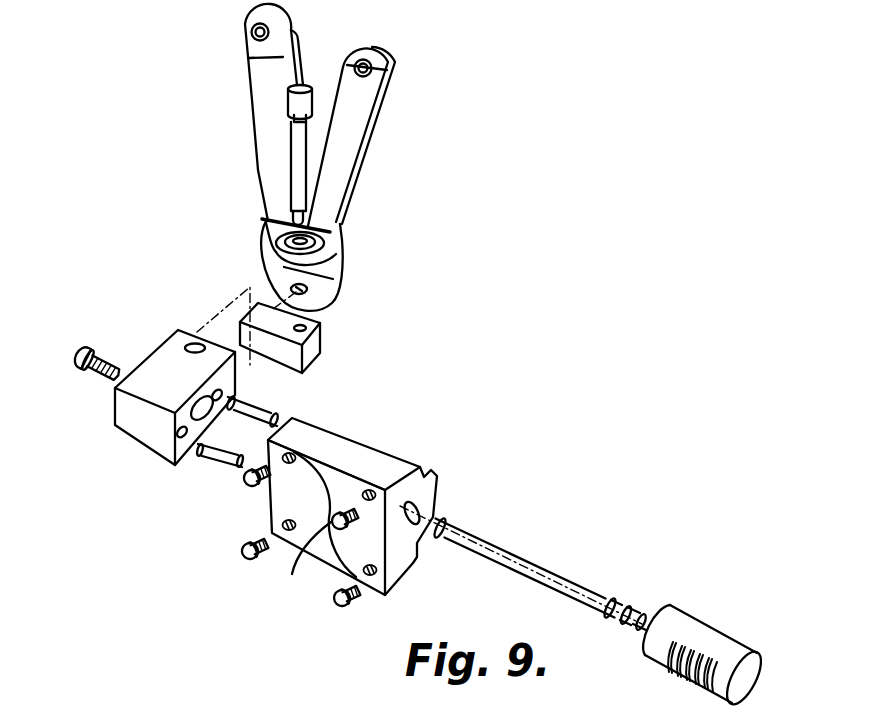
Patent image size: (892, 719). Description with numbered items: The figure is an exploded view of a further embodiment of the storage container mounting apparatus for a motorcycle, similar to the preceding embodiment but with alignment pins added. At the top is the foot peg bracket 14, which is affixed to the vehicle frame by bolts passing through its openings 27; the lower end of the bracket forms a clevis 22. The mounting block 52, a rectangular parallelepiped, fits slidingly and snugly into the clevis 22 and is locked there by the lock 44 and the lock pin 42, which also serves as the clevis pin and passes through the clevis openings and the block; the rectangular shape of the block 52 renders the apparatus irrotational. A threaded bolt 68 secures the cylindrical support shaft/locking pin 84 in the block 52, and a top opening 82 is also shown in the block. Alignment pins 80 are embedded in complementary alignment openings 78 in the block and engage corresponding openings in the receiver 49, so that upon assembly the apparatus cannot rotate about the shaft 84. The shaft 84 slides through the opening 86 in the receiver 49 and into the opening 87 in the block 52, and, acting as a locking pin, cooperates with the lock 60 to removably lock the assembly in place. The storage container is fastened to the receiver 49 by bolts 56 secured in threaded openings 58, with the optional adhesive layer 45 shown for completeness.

The foot peg bracket 14 is at (263, 125).
The openings 27 is at (251, 36).
The lock pin 42 is at (297, 162).
The clevis 22 is at (327, 250).
The lock 44 is at (317, 347).
The mounting block 52 is at (137, 422).
The hole 82 is at (195, 346).
The opening 87 is at (197, 421).
The alignment openings 78 is at (212, 391).
The threaded bolt 68 is at (95, 355).
The alignment pins 80 is at (253, 412).
The adhesive layer 45 is at (330, 457).
The receiver 49 is at (319, 453).
The threaded openings 58 is at (289, 464).
The bolts 56 is at (248, 487).
The opening 86 is at (416, 511).
The cylindrical support shaft/locking pin 84 is at (565, 578).
The lock 60 is at (702, 628).